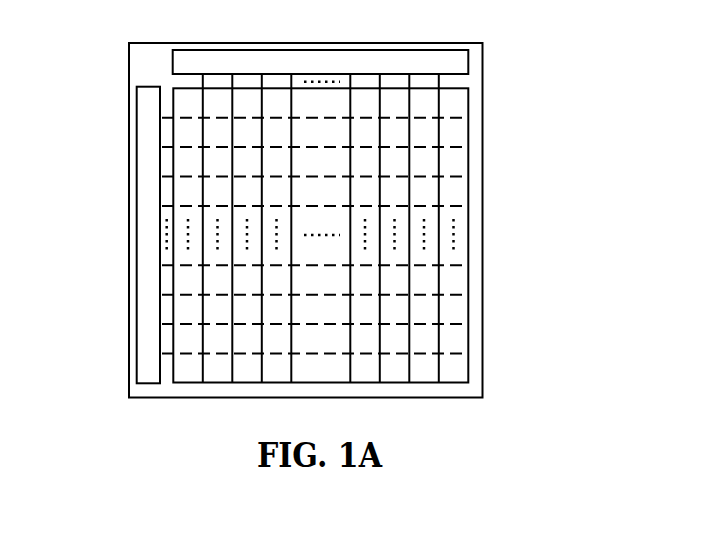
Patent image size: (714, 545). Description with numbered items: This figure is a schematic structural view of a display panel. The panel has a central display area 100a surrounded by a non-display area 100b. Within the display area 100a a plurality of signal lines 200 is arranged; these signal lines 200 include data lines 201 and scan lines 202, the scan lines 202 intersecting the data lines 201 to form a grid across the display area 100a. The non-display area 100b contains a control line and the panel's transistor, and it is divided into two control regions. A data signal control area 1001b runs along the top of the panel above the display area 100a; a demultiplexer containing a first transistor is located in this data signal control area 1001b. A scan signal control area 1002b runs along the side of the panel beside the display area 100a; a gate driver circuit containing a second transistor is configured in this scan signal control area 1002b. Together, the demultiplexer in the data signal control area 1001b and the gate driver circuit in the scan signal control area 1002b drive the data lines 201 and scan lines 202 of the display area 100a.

The display area 100a is at (428, 370).
The non-display area 100b is at (468, 283).
The data signal control area 1001b is at (453, 59).
The scan signal control area 1002b is at (143, 181).
The signal lines 200 is at (384, 236).
The data lines 201 is at (408, 123).
The scan lines 202 is at (427, 177).